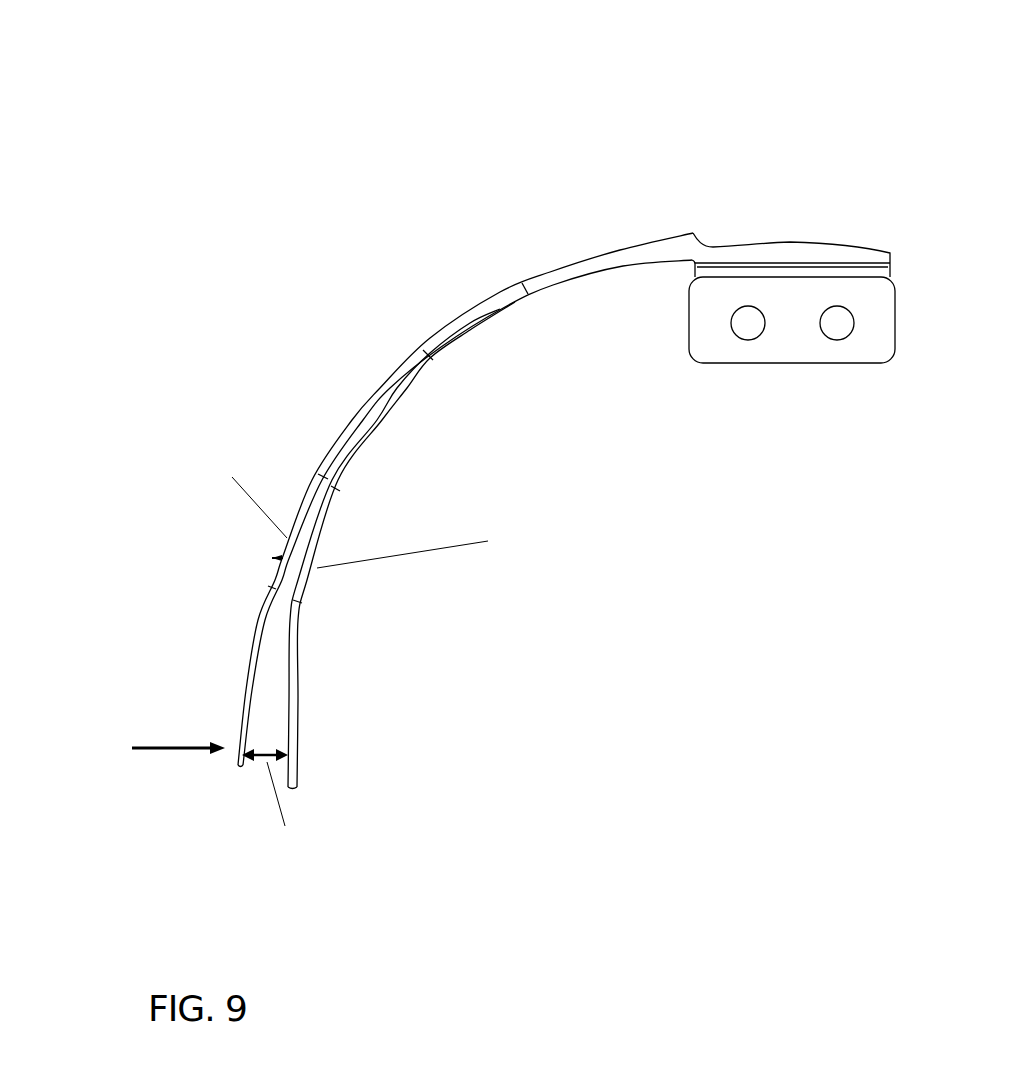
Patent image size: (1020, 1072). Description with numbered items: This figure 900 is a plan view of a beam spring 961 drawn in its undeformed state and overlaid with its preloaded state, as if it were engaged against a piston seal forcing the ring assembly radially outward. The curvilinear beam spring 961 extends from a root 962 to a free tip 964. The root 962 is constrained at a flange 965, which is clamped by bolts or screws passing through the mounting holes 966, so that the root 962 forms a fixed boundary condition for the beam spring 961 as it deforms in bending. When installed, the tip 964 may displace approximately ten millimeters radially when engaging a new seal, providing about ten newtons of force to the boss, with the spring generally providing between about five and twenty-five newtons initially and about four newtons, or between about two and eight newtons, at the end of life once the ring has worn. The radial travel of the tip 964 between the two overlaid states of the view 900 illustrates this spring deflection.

The spring arm assembly 900 is at (70, 69).
The beam spring 961 is at (425, 262).
The root 962 is at (698, 245).
The tip 964 is at (290, 755).
The flange 965 is at (718, 312).
The mounting holes 966 is at (841, 381).